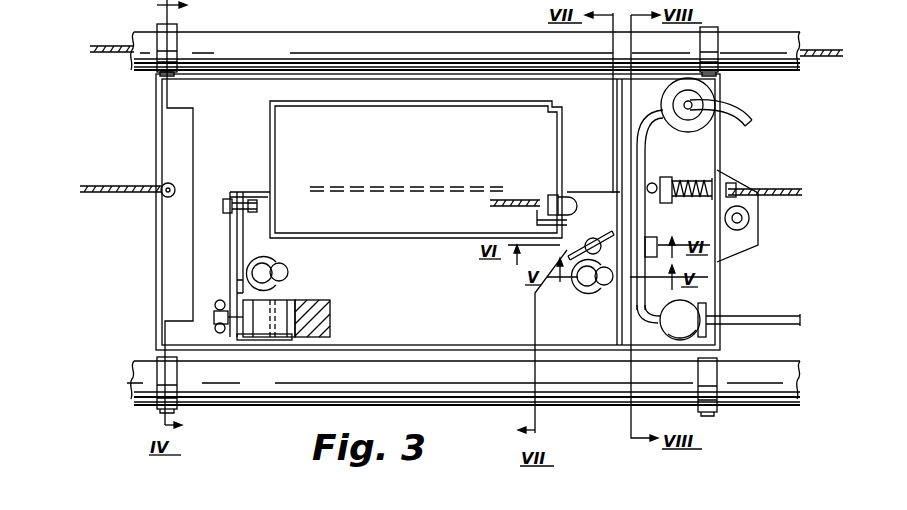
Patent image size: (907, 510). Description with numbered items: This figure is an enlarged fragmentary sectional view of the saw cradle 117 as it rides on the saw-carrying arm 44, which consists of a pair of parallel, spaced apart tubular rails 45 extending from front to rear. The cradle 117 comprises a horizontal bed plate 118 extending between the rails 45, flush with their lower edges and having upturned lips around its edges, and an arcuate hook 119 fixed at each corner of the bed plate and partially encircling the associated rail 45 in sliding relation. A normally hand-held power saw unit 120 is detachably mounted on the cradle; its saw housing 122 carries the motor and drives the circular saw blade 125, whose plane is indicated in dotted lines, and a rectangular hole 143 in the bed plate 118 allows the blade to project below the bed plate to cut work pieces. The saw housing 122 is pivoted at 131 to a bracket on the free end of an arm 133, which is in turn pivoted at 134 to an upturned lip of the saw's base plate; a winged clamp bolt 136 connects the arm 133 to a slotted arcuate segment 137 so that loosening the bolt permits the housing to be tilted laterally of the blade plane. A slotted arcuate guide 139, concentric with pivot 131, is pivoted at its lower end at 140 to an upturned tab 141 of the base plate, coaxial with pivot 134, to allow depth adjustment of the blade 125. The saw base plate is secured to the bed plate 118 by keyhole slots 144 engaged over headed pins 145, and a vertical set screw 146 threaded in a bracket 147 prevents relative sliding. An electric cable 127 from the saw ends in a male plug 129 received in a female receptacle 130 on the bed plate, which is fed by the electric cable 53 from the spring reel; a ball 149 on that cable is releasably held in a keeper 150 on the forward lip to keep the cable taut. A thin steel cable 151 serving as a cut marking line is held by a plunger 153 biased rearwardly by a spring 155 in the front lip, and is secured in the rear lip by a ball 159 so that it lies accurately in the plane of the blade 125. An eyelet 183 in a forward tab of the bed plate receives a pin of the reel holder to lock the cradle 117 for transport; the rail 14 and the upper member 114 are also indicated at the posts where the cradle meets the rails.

The rail 14 is at (750, 35).
The saw-carrying arm 44 is at (790, 407).
The rails 45 is at (336, 40).
The electric cable 53 is at (758, 319).
The upper post 114 is at (160, 26).
The saw cradle 117 is at (158, 131).
The bed plate 118 is at (240, 88).
The arcuate hook 119 is at (706, 410).
The power saw unit 120 is at (262, 191).
The saw housing 122 is at (328, 316).
The circular saw blade 125 is at (449, 187).
The electric cable 127 is at (749, 116).
The male plug 129 is at (710, 100).
The female receptacle 130 is at (706, 126).
The pivot 131 is at (265, 345).
The arm 133 is at (243, 237).
The pivot 134 is at (225, 202).
The winged clamp bolt 136 is at (217, 321).
The slotted arcuate segment 137 is at (237, 278).
The slotted arcuate guide 139 is at (513, 200).
The pivot 140 is at (567, 208).
The upturned tab 141 is at (572, 232).
The rectangular hole 143 is at (396, 104).
The keyhole slots 144 is at (284, 269).
The headed pin 145 is at (270, 277).
The vertical set screw 146 is at (586, 238).
The bracket 147 is at (653, 257).
The ball 149 is at (666, 334).
The keeper 150 is at (704, 312).
The thin steel cable 151 is at (830, 48).
The plunger 153 is at (670, 180).
The spring 155 is at (697, 200).
The ball 159 is at (176, 169).
The eyelet 183 is at (752, 222).